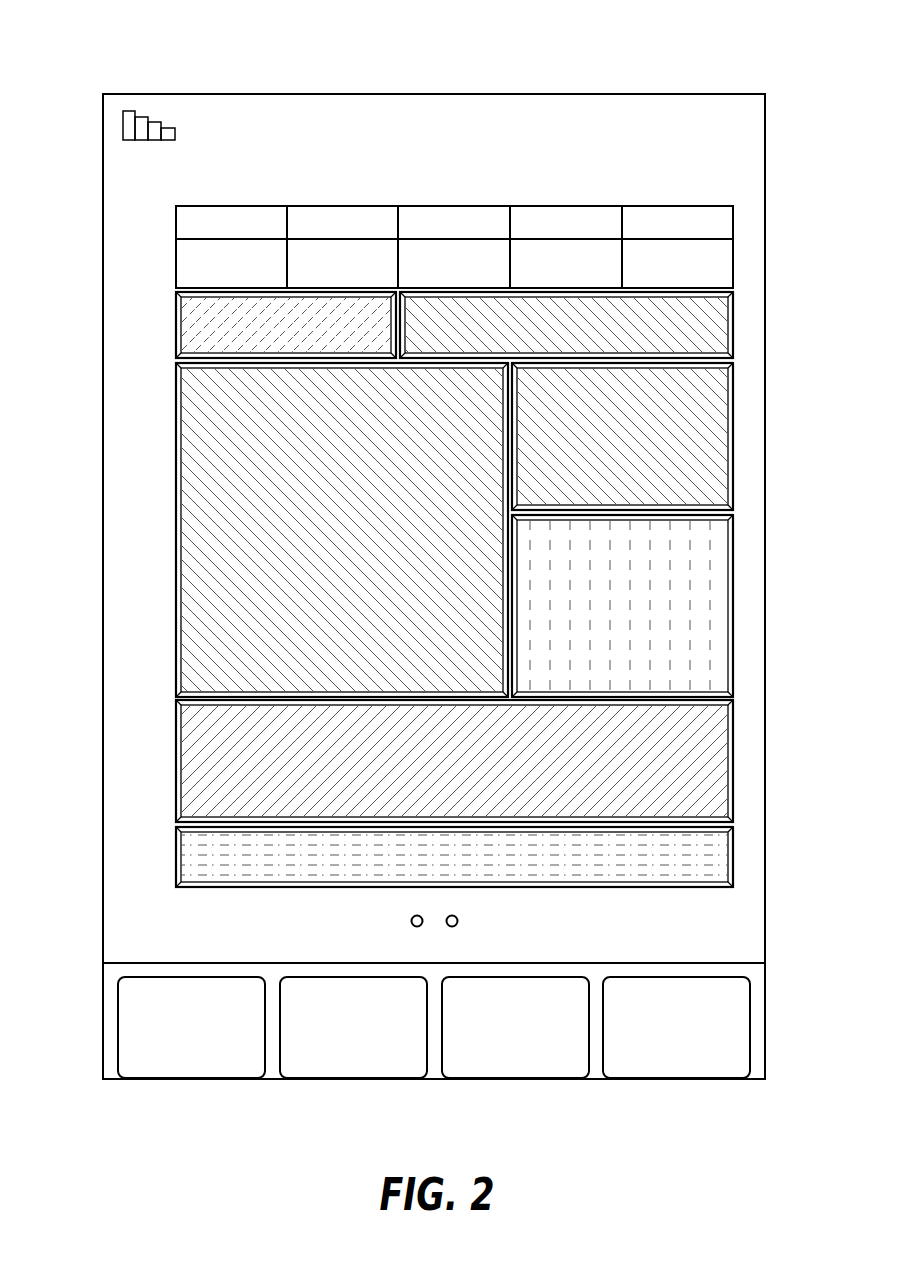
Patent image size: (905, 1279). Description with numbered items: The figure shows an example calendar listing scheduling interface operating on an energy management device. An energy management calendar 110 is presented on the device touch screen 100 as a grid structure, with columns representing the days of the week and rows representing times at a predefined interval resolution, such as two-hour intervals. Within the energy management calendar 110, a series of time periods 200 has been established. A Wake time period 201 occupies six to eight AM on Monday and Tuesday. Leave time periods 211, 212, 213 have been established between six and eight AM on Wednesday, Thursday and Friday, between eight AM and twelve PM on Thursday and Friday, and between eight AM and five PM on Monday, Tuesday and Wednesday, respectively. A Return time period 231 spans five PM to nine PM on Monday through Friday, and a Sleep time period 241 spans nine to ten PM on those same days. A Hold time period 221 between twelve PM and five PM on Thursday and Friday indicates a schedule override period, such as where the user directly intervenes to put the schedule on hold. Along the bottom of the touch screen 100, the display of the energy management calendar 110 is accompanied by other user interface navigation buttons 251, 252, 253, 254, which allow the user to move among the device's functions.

The device touch screen 100 is at (677, 53).
The energy management calendar 110 is at (456, 206).
The time periods 200 is at (153, 288).
The Wake time period 201 is at (190, 339).
The Leave time period 211 is at (713, 334).
The Leave time period 212 is at (713, 437).
The Leave time period 213 is at (190, 491).
The Hold time period 221 is at (713, 589).
The Return time period 231 is at (713, 763).
The Sleep time period 241 is at (713, 853).
The user interface navigation button 251 is at (192, 1079).
The user interface navigation button 252 is at (355, 1079).
The user interface navigation button 253 is at (516, 1079).
The user interface navigation button 254 is at (677, 1079).